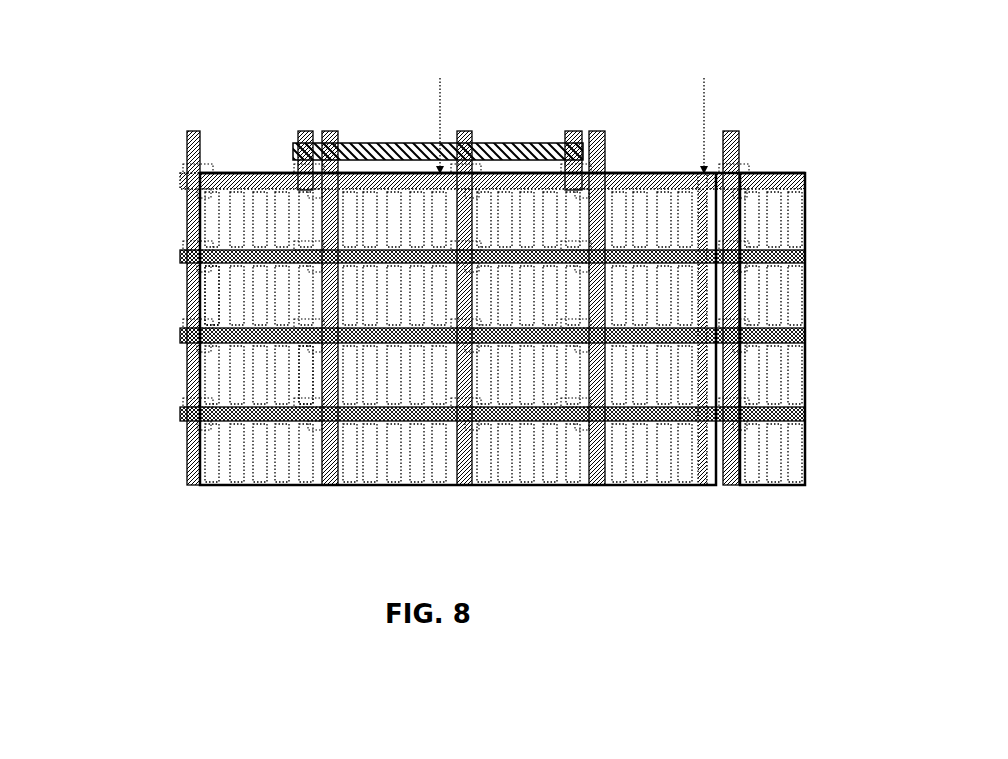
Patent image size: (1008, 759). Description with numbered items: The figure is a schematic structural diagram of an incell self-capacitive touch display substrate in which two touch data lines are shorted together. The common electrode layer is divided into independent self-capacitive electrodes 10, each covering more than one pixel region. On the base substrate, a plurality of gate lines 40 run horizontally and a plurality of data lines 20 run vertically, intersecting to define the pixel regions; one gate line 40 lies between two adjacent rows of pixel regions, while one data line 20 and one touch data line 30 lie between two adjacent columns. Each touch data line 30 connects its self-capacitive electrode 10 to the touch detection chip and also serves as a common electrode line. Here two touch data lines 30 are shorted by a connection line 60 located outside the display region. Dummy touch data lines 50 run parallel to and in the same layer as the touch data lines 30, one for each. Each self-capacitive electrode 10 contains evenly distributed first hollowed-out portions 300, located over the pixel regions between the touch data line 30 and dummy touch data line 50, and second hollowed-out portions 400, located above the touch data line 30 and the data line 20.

The self-capacitive electrode 10 is at (355, 488).
The data line 20 is at (197, 131).
The touch data line 30 is at (306, 131).
The gate line 40 is at (804, 253).
The dummy touch data line 50 is at (572, 110).
The connection line 60 is at (381, 141).
The first hollowed-out portion 300 is at (227, 292).
The second hollowed-out portion 400 is at (303, 377).